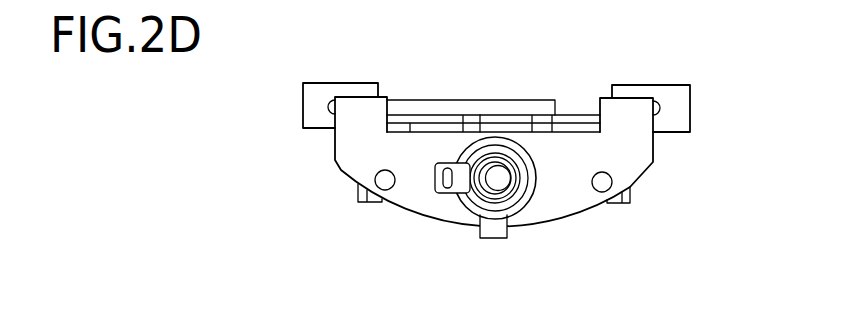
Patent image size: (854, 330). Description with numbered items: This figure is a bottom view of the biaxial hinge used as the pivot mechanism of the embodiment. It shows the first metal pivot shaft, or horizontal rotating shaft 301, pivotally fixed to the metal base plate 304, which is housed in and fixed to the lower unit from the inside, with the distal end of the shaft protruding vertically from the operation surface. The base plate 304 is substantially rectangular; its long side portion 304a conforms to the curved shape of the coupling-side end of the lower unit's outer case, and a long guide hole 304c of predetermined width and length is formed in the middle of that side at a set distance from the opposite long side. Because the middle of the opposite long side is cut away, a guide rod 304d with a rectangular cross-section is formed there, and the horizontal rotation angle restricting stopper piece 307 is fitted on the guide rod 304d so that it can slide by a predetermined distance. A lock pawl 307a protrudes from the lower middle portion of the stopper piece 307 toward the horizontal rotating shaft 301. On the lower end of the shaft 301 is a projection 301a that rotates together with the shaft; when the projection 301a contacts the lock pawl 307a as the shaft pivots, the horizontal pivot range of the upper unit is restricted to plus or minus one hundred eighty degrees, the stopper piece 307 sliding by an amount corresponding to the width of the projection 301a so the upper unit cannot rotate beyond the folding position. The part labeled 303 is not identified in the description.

The first metal pivot shaft 301 is at (492, 182).
The projection 301a is at (493, 239).
The guide shaft holder 303 is at (303, 107).
The metal base plate 304 is at (583, 203).
The long side portion 304a is at (358, 185).
The long guide hole 304c is at (577, 132).
The guide rod 304d is at (578, 118).
The horizontal rotation angle restricting stopper piece 307 is at (420, 100).
The lock pawl 307a is at (473, 132).